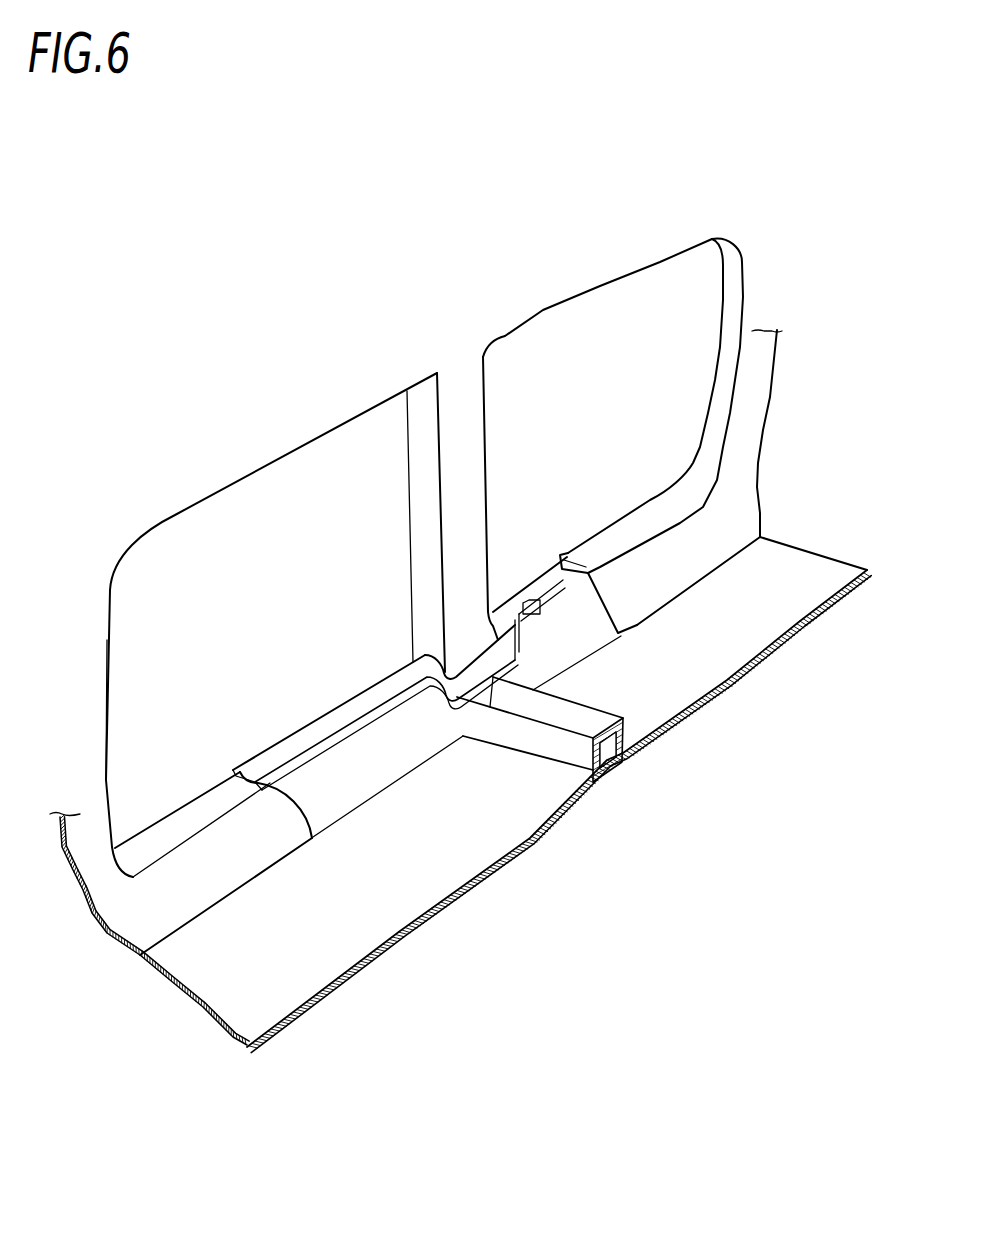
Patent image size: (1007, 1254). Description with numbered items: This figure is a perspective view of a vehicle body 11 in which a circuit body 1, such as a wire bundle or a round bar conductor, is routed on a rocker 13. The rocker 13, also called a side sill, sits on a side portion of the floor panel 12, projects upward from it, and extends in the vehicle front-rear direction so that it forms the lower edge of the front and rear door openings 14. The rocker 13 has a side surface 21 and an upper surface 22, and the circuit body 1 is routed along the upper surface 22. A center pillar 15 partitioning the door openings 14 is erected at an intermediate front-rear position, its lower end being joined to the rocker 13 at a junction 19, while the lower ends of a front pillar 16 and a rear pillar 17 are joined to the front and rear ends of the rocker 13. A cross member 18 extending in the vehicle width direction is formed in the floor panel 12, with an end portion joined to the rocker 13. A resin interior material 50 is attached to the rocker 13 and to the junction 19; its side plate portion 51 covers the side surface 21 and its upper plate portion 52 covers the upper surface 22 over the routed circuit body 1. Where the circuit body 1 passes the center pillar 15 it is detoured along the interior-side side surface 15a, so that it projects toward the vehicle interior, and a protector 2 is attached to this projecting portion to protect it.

The circuit body 1 is at (348, 700).
The protector 2 is at (460, 705).
The vehicle body 11 is at (413, 947).
The floor panel 12 is at (683, 680).
The rocker 13 is at (393, 793).
The door openings 14 is at (537, 367).
The center pillar 15 is at (422, 448).
The side surface 15a is at (467, 540).
The front pillar 16 is at (80, 755).
The rear pillar 17 is at (750, 387).
The cross member 18 is at (557, 747).
The junction 19 is at (475, 640).
The side surface 21 is at (320, 820).
The upper surface 22 is at (275, 757).
The interior material 50 is at (178, 905).
The side plate portion 51 is at (250, 867).
The upper plate portion 52 is at (194, 824).